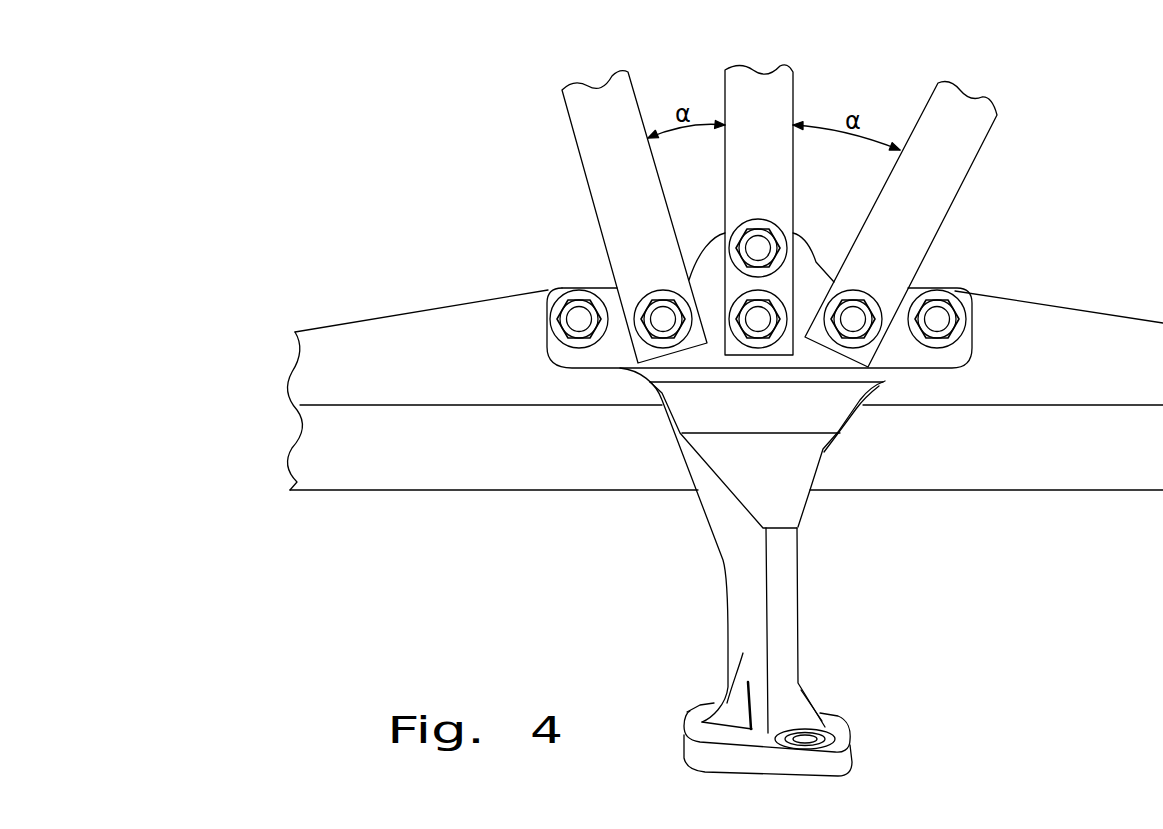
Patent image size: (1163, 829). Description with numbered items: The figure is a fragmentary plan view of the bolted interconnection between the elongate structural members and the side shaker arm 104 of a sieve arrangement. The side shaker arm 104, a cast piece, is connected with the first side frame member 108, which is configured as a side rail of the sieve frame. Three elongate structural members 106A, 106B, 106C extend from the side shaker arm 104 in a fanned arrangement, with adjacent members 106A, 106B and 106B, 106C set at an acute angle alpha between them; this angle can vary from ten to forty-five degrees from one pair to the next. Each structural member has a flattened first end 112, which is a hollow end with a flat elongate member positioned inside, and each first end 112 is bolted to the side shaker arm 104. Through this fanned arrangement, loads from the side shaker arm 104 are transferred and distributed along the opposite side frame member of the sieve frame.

The side shaker arm 104 is at (792, 630).
The elongate structural member 106A is at (963, 157).
The elongate structural member 106B is at (753, 90).
The elongate structural member 106C is at (583, 128).
The first side frame member 108 is at (518, 480).
The first end 112 is at (622, 268).